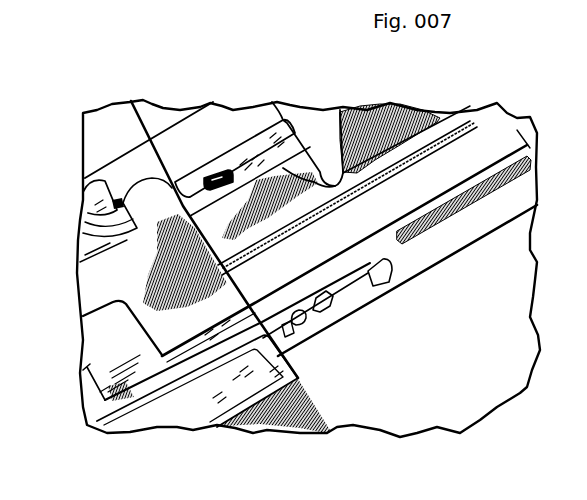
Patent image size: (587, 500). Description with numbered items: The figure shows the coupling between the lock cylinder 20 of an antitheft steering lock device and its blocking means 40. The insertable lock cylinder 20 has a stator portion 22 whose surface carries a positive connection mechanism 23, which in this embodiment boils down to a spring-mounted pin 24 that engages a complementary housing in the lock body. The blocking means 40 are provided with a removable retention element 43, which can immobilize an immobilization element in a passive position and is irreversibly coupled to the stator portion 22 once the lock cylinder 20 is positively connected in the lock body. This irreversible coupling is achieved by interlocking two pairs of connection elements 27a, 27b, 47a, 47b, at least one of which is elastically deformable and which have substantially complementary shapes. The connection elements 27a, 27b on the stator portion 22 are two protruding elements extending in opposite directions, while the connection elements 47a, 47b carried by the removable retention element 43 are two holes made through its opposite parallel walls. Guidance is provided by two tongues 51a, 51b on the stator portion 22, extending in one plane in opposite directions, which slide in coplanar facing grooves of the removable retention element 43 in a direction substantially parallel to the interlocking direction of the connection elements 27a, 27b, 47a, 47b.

The lock cylinder 20 is at (176, 405).
The stator portion 22 is at (122, 362).
The positive connection mechanism 23 is at (78, 193).
The spring-mounted pin 24 is at (93, 217).
The connection element 27a is at (245, 140).
The connection element 27b is at (317, 308).
The blocking means 40 is at (302, 112).
The removable retention element 43 is at (368, 147).
The connection element 47a is at (210, 168).
The connection element 47b is at (307, 328).
The tongue 51a is at (407, 113).
The tongue 51b is at (366, 276).